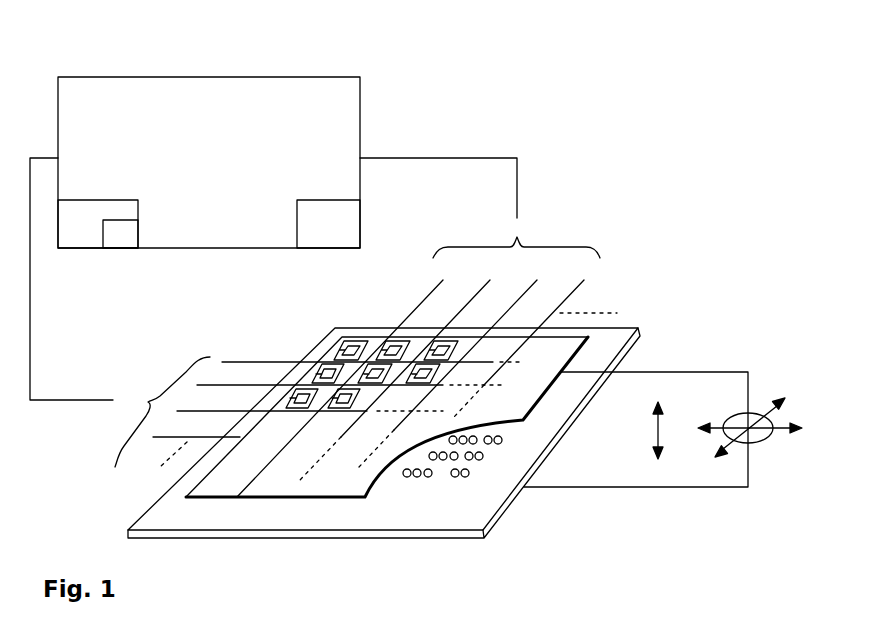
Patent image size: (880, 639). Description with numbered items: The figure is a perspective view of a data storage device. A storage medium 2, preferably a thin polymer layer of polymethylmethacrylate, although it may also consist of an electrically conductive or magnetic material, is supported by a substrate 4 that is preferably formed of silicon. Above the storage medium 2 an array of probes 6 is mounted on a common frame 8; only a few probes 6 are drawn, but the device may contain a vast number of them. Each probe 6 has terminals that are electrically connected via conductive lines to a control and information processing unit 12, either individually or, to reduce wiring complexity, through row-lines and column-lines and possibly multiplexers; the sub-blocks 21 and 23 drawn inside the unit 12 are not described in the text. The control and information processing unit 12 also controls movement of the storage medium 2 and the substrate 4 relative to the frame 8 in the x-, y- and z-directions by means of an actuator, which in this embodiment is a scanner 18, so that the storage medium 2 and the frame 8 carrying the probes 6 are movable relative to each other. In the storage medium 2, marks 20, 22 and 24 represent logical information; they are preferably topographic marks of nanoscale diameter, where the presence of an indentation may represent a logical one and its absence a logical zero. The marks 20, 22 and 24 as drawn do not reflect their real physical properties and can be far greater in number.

The storage medium 2 is at (150, 510).
The substrate 4 is at (210, 540).
The probes 6 is at (385, 338).
The common frame 8 is at (205, 483).
The control and information processing unit 12 is at (116, 76).
The scanner 18 is at (768, 385).
The mark 20 is at (418, 478).
The mark 22 is at (428, 477).
The mark 24 is at (457, 477).
The row driver 21 is at (88, 199).
The column driver 23 is at (310, 199).